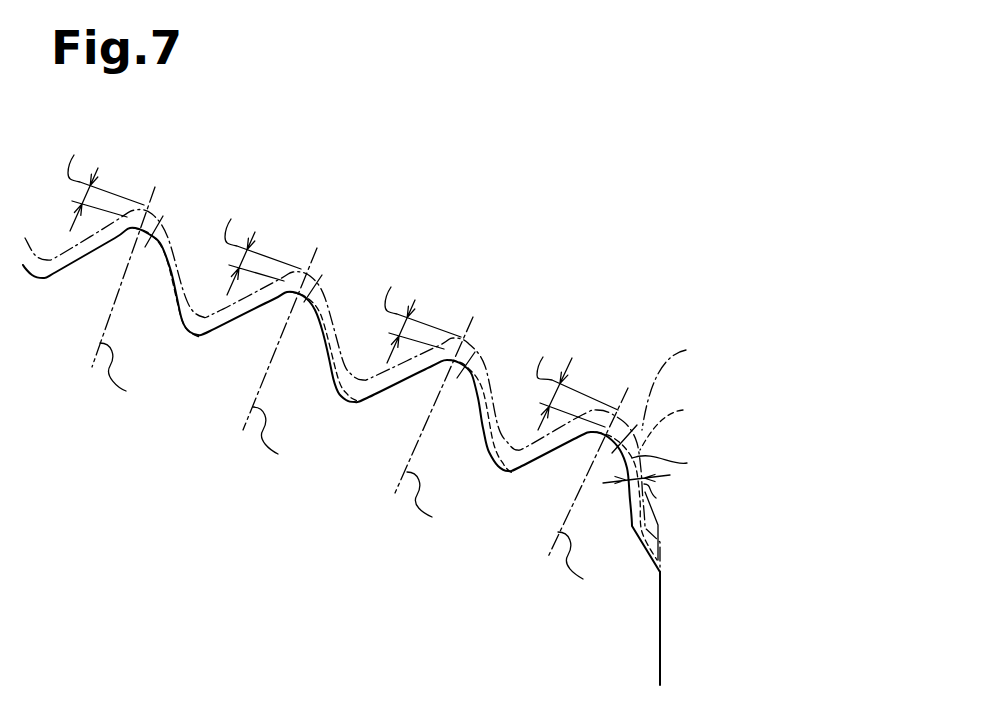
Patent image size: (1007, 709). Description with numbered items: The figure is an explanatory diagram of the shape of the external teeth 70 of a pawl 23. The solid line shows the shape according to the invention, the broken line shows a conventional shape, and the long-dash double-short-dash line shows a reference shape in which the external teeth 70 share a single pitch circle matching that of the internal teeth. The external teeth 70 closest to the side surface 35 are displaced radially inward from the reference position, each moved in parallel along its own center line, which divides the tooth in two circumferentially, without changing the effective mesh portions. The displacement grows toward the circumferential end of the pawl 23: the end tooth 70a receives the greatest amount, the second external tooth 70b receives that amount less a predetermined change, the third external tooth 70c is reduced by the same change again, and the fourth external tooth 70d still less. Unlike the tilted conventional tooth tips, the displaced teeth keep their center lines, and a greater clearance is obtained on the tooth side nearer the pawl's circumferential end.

The pawl 23 is at (692, 179).
The side surface 35 is at (662, 632).
The external teeth 70 is at (341, 400).
The end tooth 70a is at (637, 425).
The second external tooth 70b is at (475, 352).
The third external tooth 70c is at (322, 275).
The fourth external tooth 70d is at (163, 216).